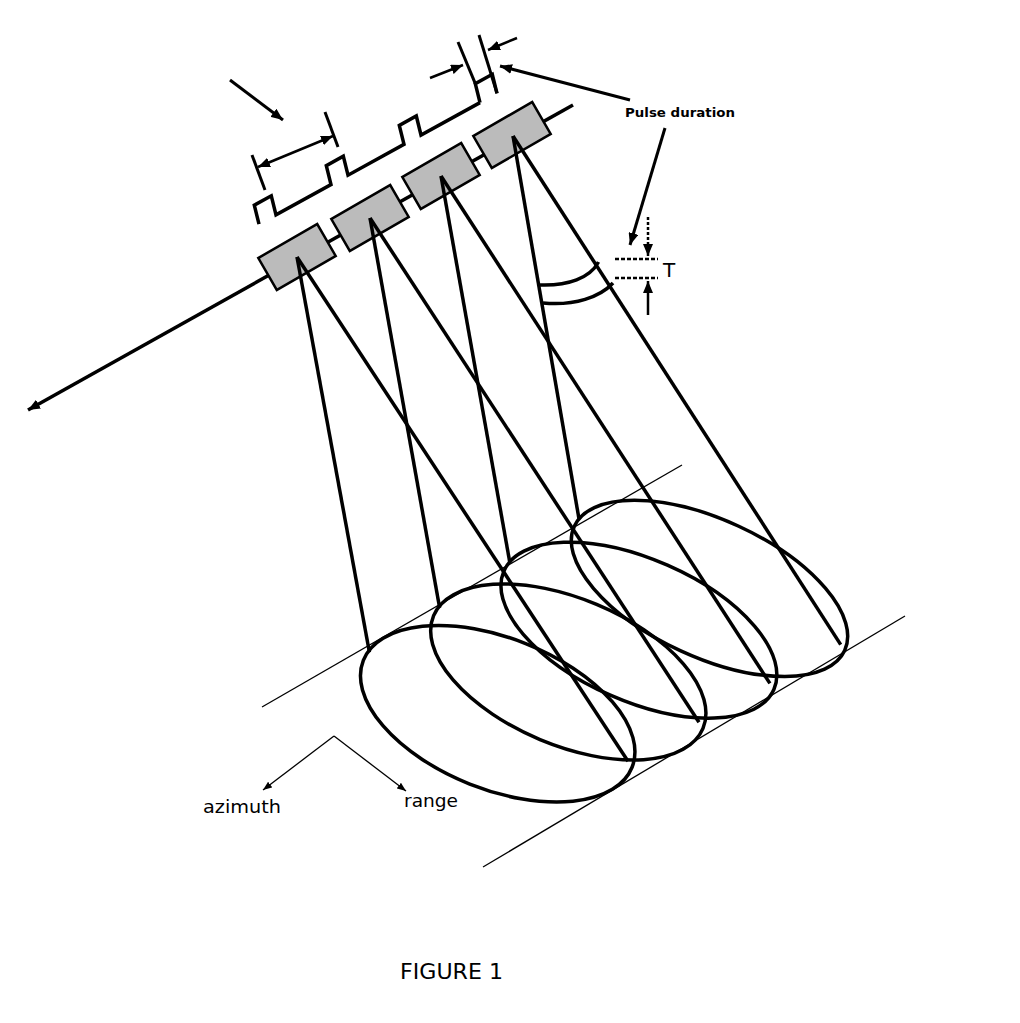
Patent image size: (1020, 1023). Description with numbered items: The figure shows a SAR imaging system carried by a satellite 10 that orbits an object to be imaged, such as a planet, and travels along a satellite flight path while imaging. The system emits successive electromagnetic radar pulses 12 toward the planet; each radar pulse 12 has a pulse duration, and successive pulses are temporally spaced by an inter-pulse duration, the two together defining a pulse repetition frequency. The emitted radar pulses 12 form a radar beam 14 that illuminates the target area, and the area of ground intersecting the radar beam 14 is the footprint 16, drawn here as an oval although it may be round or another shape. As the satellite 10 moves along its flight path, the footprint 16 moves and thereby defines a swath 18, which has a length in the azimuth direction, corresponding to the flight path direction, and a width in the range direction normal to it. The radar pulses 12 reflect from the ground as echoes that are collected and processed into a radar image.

The satellite 10 is at (260, 270).
The radar pulse 12 is at (476, 88).
The radar beam 14 is at (302, 140).
The footprint 16 is at (810, 637).
The swath 18 is at (482, 818).